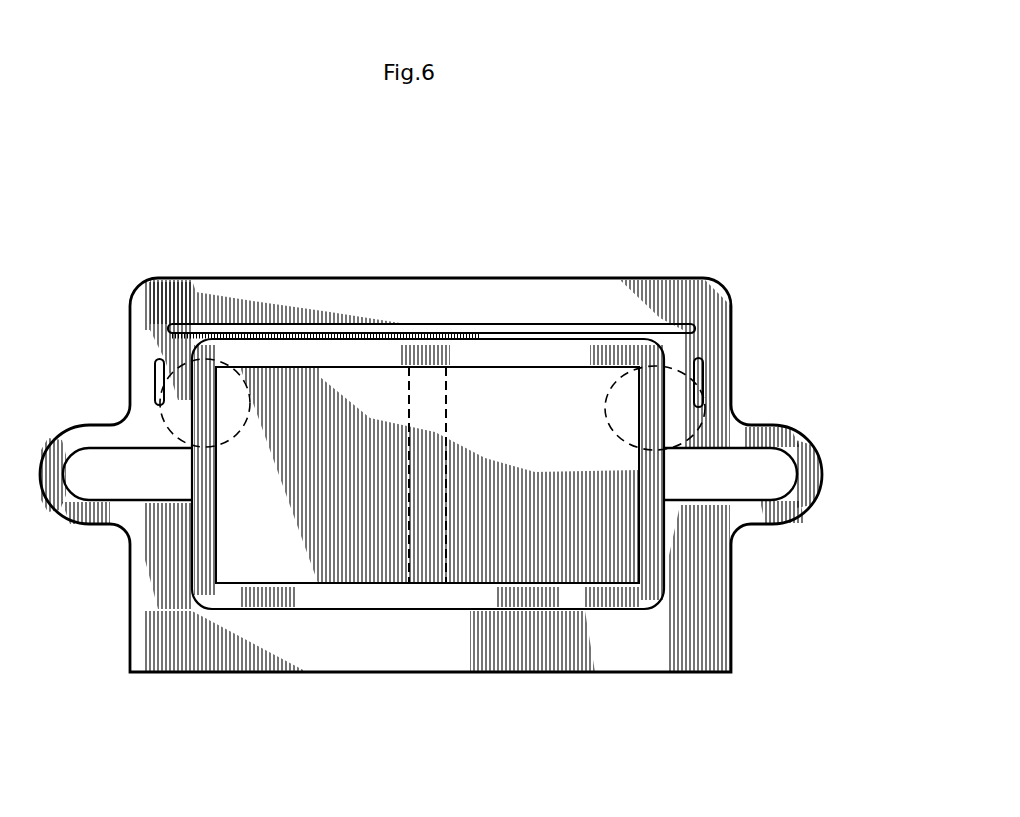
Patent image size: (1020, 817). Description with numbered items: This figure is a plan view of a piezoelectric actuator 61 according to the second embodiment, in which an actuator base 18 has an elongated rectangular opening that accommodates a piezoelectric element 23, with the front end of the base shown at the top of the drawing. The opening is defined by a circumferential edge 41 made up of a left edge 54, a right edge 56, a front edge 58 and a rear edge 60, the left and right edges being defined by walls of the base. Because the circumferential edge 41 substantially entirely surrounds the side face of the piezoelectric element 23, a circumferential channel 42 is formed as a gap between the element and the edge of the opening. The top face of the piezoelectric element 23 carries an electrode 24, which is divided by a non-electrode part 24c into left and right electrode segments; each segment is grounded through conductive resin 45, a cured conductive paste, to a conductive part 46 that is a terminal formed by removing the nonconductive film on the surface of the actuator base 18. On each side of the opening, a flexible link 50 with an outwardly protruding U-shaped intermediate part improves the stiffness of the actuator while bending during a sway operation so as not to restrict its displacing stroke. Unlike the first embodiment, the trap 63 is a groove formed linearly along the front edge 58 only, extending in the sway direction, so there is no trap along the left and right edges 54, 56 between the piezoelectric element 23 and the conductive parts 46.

The holder assembly 61 is at (684, 137).
The actuator base 18 is at (611, 292).
The piezoelectric element 23 is at (346, 397).
The electrode 24 is at (485, 553).
The non-electrode part 24c is at (407, 537).
The circumferential edge 41 is at (276, 600).
The circumferential channel 42 is at (615, 595).
The conductive resin 45 is at (163, 358).
The conductive part 46 is at (157, 381).
The flexible link 50 is at (58, 522).
The left edge 54 is at (200, 546).
The right edge 56 is at (659, 545).
The front edge 58 is at (440, 342).
The rear edge 60 is at (545, 600).
The trap 63 is at (498, 331).